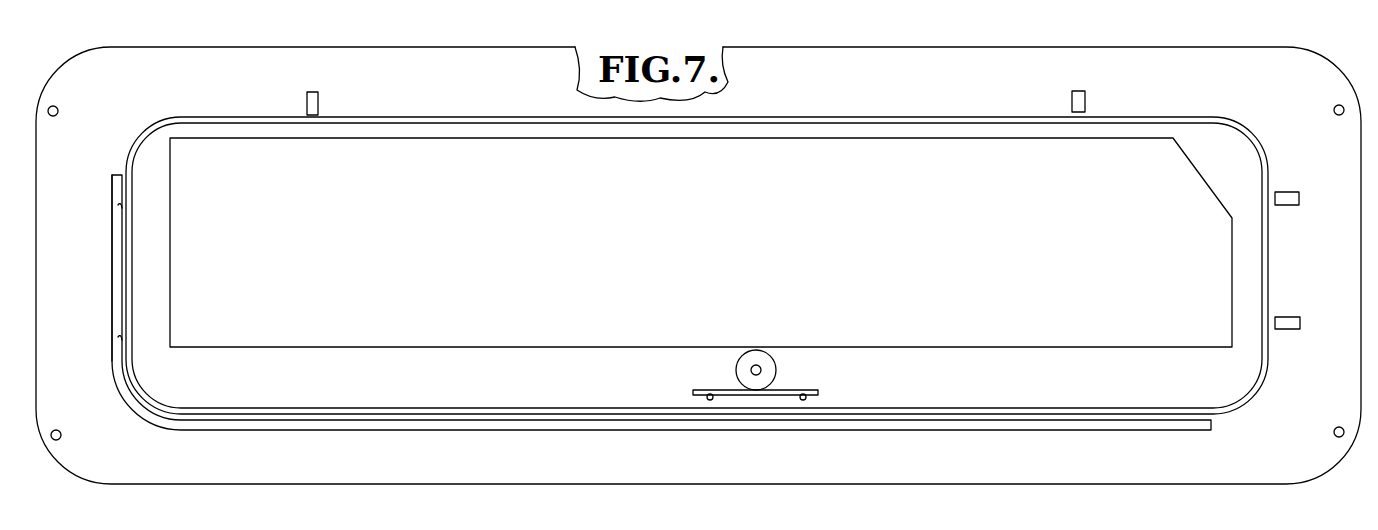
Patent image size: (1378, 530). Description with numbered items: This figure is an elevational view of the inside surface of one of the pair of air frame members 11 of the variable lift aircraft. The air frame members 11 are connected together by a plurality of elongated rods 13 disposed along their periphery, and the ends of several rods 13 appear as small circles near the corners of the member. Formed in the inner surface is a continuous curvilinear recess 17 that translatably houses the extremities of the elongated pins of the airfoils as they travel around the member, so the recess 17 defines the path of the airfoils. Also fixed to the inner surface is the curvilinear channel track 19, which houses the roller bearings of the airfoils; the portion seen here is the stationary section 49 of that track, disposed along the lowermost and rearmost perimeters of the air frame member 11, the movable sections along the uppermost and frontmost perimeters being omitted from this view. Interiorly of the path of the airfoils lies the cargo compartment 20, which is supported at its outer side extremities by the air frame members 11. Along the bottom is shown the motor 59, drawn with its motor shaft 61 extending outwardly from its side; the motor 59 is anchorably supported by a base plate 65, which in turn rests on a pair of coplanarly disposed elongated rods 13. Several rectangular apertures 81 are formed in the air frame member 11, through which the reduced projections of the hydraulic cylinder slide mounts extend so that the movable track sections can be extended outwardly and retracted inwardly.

The air frame member 11 is at (1350, 72).
The elongated rod 13 is at (58, 107).
The continuous curvilinear recess 17 is at (773, 119).
The curvilinear channel track 19 is at (112, 276).
The cargo compartment 20 is at (887, 215).
The stationary section 49 is at (112, 362).
The motor 59 is at (736, 371).
The motor shaft 61 is at (761, 368).
The base plate 65 is at (795, 389).
The rectangular aperture 81 is at (318, 105).